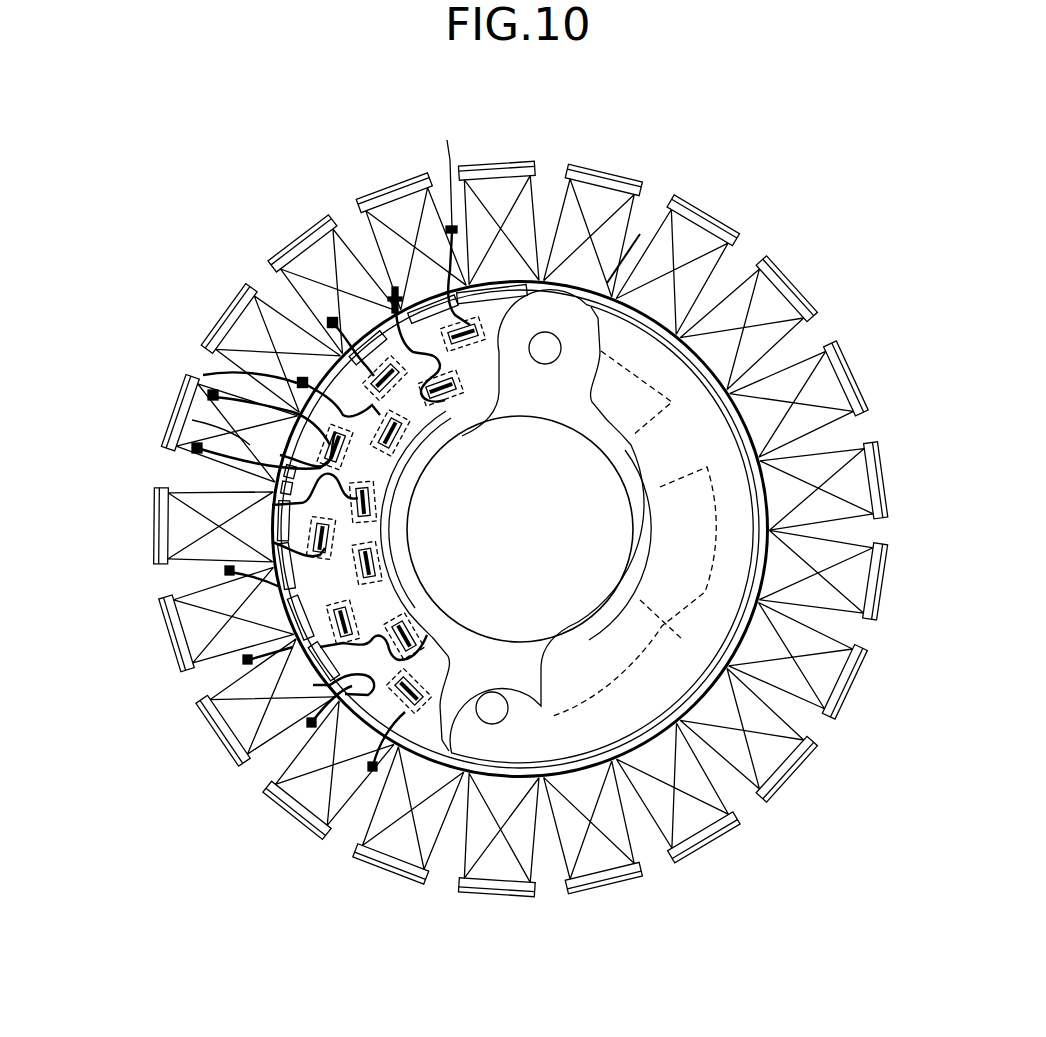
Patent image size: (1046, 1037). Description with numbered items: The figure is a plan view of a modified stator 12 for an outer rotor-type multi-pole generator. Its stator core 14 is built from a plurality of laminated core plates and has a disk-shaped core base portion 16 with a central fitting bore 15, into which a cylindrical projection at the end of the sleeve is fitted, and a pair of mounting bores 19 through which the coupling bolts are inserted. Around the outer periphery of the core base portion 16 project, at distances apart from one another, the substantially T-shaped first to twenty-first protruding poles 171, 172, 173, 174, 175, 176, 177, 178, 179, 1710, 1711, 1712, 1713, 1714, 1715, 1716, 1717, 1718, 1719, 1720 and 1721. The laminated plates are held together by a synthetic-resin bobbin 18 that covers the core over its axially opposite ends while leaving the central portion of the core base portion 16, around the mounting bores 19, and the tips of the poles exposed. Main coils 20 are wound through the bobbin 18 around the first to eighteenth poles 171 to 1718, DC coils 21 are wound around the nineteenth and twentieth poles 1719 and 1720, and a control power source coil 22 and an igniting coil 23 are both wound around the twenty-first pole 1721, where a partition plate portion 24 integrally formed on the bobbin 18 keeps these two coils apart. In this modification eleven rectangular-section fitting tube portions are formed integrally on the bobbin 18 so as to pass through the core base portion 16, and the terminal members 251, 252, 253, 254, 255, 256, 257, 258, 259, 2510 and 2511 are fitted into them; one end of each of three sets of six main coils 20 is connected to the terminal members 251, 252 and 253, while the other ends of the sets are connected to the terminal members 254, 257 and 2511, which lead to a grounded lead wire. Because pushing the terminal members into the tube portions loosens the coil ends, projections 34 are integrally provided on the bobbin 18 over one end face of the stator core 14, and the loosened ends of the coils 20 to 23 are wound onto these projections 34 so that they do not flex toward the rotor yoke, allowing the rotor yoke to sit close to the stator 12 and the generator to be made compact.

The stator 12 is at (676, 900).
The stator core 14 is at (538, 636).
The fitting bore 15 is at (622, 478).
The core base portion 16 is at (645, 540).
The bobbin 18 is at (683, 681).
The mounting bores 19 is at (535, 340).
The main coils 20 is at (428, 217).
The DC coils 21 is at (275, 345).
The control power source coil 22 is at (192, 420).
The igniting coil 23 is at (237, 463).
The partition plate portion 24 is at (224, 392).
The projections 34 is at (338, 695).
The first protruding pole 171 is at (153, 510).
The second protruding pole 172 is at (166, 638).
The third protruding pole 173 is at (212, 740).
The fourth protruding pole 174 is at (284, 822).
The fifth protruding pole 175 is at (388, 878).
The sixth protruding pole 176 is at (495, 902).
The seventh protruding pole 177 is at (606, 894).
The eighth protruding pole 178 is at (710, 848).
The ninth protruding pole 179 is at (820, 782).
The tenth protruding pole 1710 is at (850, 684).
The eleventh protruding pole 1711 is at (877, 622).
The twelfth protruding pole 1712 is at (878, 438).
The thirteenth protruding pole 1713 is at (848, 358).
The fourteenth protruding pole 1714 is at (794, 280).
The fifteenth protruding pole 1715 is at (708, 208).
The sixteenth protruding pole 1716 is at (603, 168).
The seventeenth protruding pole 1717 is at (496, 160).
The eighteenth protruding pole 1718 is at (388, 186).
The 19th protruding pole 1719 is at (294, 240).
The 20th protruding pole 1720 is at (217, 318).
The 21st protruding pole 1721 is at (172, 410).
The terminal member 251 is at (427, 675).
The terminal member 252 is at (413, 628).
The terminal member 253 is at (360, 610).
The terminal member 254 is at (470, 321).
The terminal member 255 is at (403, 443).
The terminal member 256 is at (380, 563).
The terminal member 257 is at (390, 304).
The terminal member 258 is at (340, 356).
The terminal member 259 is at (312, 526).
The terminal member 2510 is at (372, 503).
The terminal member 2511 is at (452, 405).